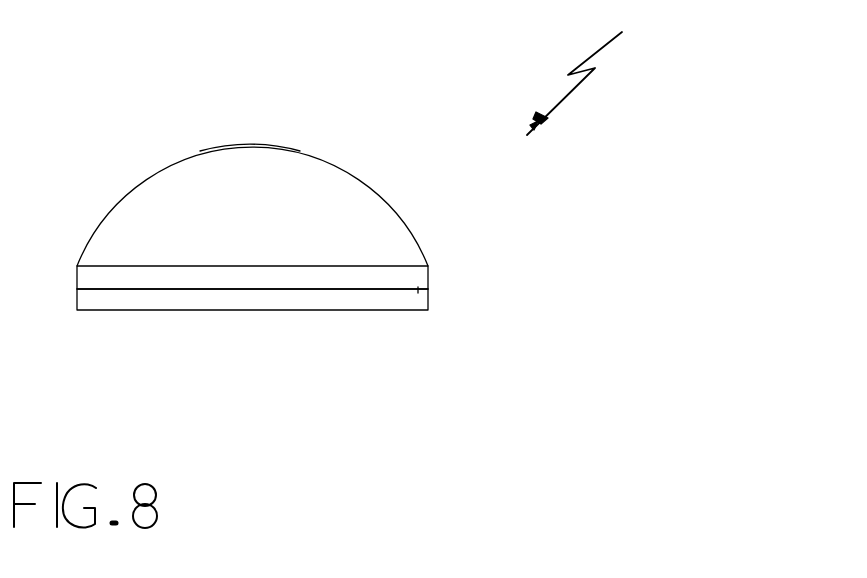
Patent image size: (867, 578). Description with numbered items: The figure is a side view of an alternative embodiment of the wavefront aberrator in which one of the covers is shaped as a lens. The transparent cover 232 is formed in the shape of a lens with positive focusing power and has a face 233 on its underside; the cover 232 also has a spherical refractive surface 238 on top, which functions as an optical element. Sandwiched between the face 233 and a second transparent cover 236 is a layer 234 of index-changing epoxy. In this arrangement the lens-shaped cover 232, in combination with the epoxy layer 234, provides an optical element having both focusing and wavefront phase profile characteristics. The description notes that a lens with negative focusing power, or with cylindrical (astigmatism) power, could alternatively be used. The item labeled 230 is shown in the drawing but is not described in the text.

The incident light 230 is at (609, 71).
The transparent cover 232 is at (310, 157).
The face 233 is at (108, 265).
The layer of index-changing epoxy 234 is at (428, 275).
The transparent cover 236 is at (415, 312).
The spherical refractive surface 238 is at (197, 150).